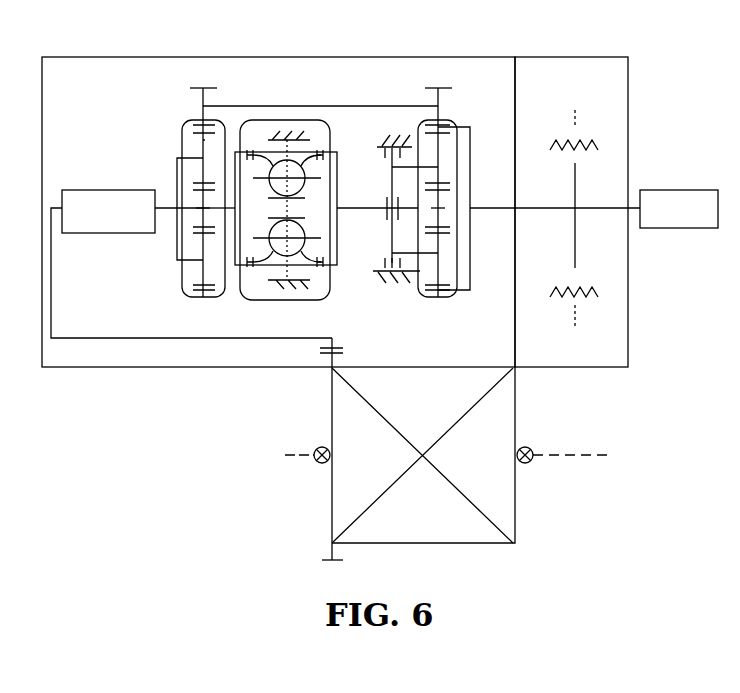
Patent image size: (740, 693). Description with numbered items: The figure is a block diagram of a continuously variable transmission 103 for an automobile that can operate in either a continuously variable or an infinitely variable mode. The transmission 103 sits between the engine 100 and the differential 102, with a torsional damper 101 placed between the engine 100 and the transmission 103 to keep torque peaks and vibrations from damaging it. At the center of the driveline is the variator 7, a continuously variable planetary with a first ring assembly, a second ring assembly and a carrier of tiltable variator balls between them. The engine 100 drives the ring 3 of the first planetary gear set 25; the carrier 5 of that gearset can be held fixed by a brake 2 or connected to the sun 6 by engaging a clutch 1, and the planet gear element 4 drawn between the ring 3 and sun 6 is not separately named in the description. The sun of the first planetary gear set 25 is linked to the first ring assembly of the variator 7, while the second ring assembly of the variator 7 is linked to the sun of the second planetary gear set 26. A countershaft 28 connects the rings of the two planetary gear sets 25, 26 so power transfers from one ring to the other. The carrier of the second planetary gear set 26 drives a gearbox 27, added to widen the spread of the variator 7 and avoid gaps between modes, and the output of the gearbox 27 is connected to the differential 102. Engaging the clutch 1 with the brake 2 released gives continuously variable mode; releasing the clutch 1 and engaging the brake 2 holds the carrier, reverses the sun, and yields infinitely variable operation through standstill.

The clutch 1 is at (384, 202).
The brake 2 is at (376, 152).
The ring 3 is at (187, 122).
The gear 4 is at (198, 143).
The carrier 5 is at (173, 158).
The sun 6 is at (198, 207).
The variator 7 is at (336, 311).
The first planetary gear set 25 is at (433, 300).
The second planetary gear set 26 is at (203, 300).
The gearbox 27 is at (191, 264).
The countershaft 28 is at (325, 104).
The engine 100 is at (696, 186).
The torsional damper 101 is at (576, 45).
The differential 102 is at (468, 545).
The continuously variable transmission 103 is at (273, 44).